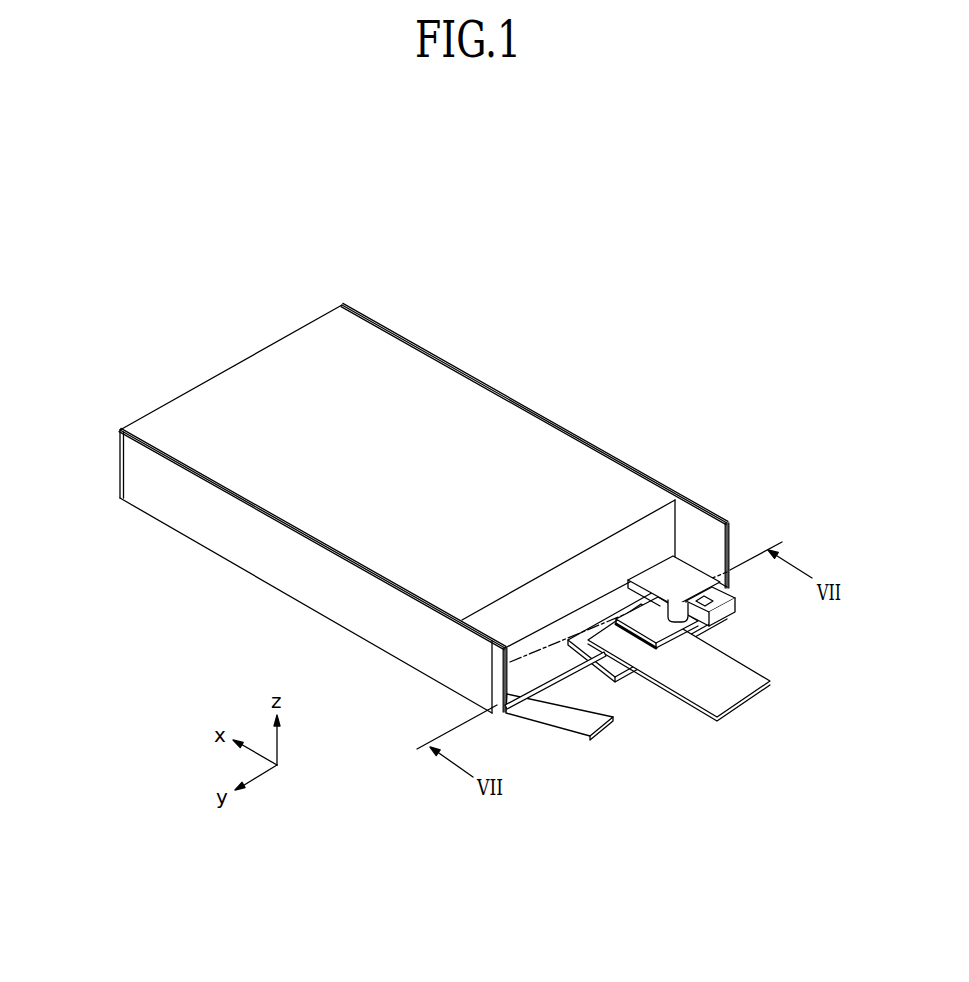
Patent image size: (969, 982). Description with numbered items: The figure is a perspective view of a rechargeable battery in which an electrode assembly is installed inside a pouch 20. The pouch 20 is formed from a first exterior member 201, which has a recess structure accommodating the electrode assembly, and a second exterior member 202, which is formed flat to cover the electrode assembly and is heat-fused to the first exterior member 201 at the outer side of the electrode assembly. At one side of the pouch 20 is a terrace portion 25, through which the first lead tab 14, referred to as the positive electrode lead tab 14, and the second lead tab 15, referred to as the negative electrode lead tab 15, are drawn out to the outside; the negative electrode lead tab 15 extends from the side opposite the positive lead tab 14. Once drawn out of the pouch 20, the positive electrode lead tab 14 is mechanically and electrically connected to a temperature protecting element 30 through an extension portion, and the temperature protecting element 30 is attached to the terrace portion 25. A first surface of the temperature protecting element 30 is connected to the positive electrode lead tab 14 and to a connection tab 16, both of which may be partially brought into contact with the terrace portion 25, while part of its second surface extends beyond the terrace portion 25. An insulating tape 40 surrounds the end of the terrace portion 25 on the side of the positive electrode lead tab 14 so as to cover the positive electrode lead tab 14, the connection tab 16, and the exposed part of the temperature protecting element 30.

The pouch 20 is at (421, 508).
The first exterior member 201 is at (287, 470).
The second exterior member 202 is at (263, 547).
The first lead tab 14 is at (712, 604).
The second lead tab 15 is at (583, 718).
The connection tab 16 is at (718, 700).
The terrace portion 25 is at (587, 668).
The temperature protecting element 30 is at (676, 643).
The insulating tape 40 is at (616, 621).